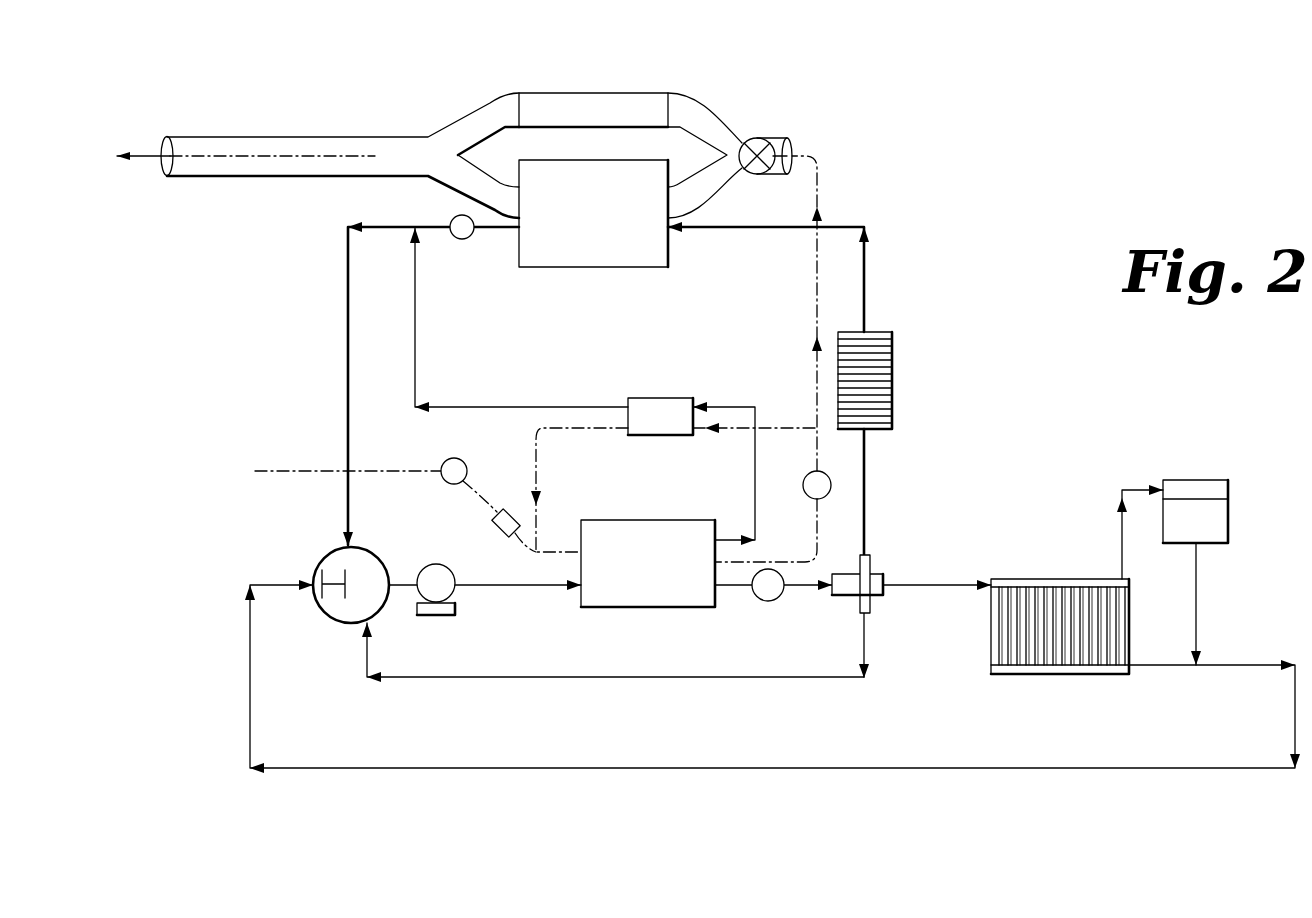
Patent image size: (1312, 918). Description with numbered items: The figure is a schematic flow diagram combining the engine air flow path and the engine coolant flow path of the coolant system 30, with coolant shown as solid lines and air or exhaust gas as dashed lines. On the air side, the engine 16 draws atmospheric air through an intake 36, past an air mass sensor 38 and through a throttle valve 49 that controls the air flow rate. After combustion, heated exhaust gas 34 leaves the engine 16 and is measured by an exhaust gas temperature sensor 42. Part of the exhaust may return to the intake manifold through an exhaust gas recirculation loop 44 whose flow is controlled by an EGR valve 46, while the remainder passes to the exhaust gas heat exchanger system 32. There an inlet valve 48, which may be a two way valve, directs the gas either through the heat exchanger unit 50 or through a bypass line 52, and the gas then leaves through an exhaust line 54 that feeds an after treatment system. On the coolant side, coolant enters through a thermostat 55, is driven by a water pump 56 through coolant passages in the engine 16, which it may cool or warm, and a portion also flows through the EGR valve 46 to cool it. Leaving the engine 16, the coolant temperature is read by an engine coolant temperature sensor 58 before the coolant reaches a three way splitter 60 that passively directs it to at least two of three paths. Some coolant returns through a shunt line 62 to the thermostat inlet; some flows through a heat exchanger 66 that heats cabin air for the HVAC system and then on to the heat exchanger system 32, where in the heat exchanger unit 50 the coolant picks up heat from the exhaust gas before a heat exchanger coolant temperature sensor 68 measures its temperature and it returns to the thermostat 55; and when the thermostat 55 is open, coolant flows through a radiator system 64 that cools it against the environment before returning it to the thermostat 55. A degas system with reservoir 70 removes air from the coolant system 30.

The engine 16 is at (648, 563).
The coolant system 30 is at (930, 552).
The exhaust gas heat exchanger system 32 is at (490, 258).
The exhaust 34 is at (816, 533).
The intake 36 is at (282, 470).
The air mass sensor 38 is at (446, 461).
The exhaust gas temperature sensor 42 is at (831, 485).
The exhaust gas recirculation loop 44 is at (590, 428).
The EGR valve 46 is at (660, 398).
The inlet valve 48 is at (758, 138).
The throttle valve 49 is at (496, 526).
The heat exchanger unit 50 is at (593, 213).
The bypass line 52 is at (597, 93).
The exhaust line 54 is at (262, 137).
The thermostat 55 is at (333, 622).
The water pump 56 is at (437, 615).
The engine coolant temperature sensor 58 is at (770, 601).
The three way splitter 60 is at (875, 595).
The shunt line 62 is at (608, 677).
The radiator system 64 is at (1065, 565).
The heat exchanger 66 is at (892, 380).
The heat exchanger coolant temperature sensor 68 is at (452, 218).
The degas system with reservoir 70 is at (1228, 515).